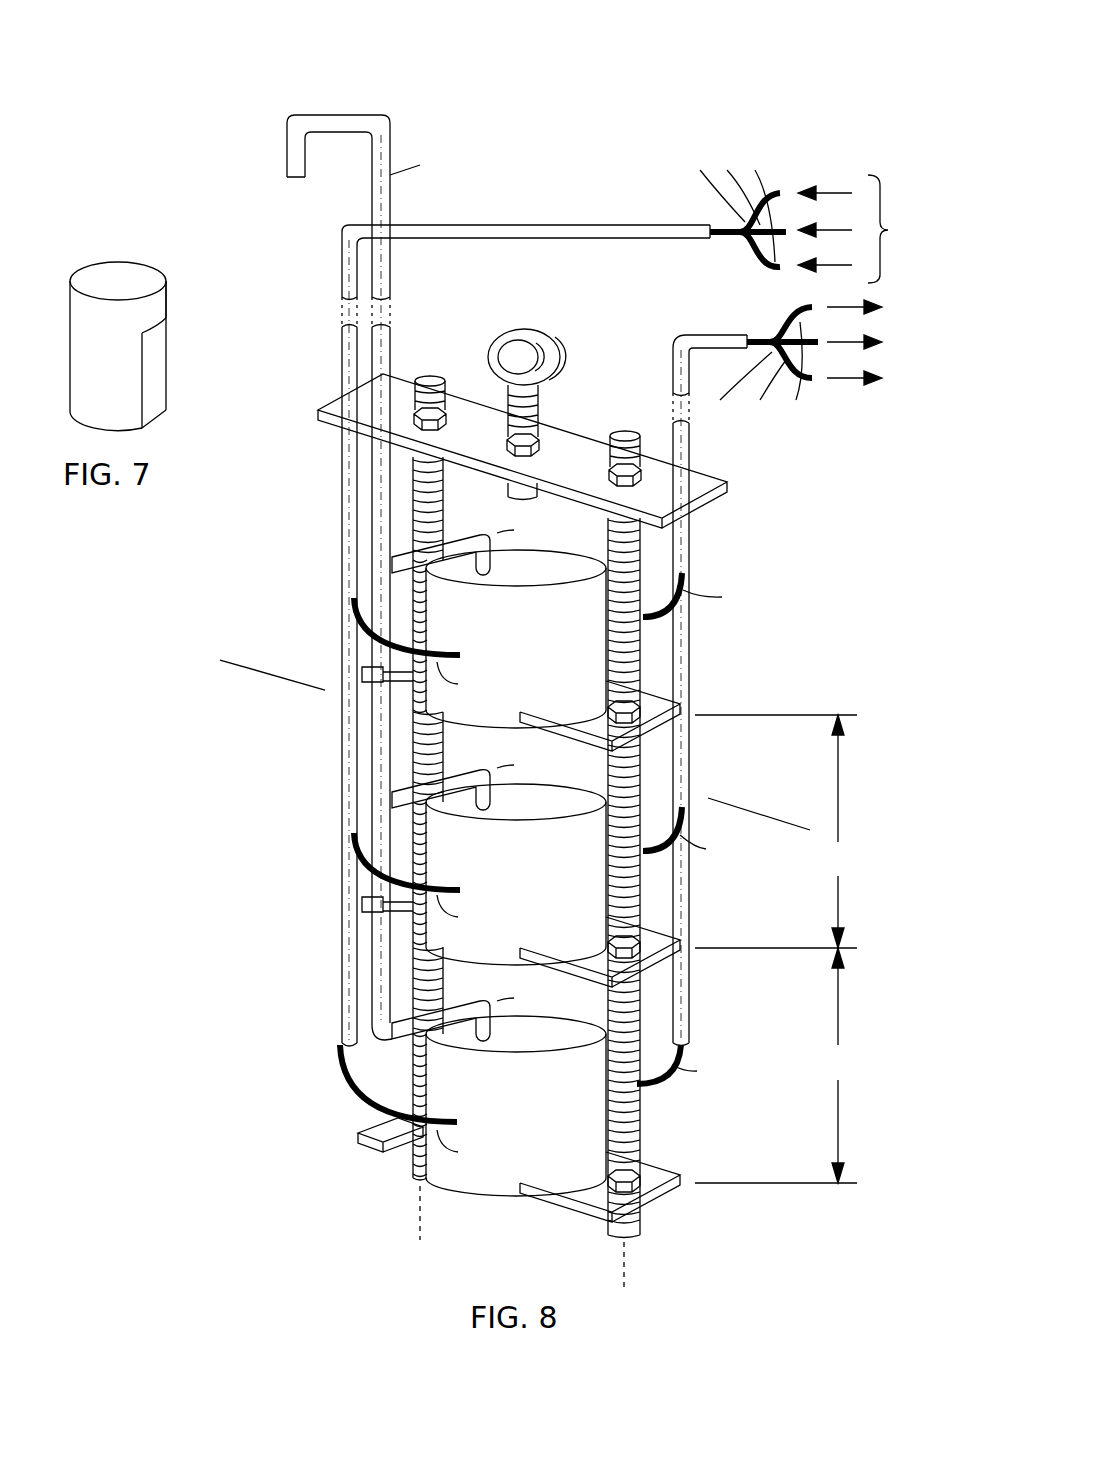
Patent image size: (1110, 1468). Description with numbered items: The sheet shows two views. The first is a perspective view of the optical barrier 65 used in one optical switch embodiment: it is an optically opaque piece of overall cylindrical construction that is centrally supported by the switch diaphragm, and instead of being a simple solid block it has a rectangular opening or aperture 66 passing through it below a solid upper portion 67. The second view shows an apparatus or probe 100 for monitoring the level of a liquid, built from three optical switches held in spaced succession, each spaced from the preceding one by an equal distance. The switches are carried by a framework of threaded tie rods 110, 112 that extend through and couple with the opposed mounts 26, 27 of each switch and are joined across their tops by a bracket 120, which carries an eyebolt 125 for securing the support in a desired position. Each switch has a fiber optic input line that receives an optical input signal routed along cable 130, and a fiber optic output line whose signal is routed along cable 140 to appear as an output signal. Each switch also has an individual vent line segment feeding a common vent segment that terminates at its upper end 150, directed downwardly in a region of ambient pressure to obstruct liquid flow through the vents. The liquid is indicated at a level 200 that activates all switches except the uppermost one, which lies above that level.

In FIG. 7, the optical barrier 65 is at (110, 278).
In FIG. 7, the rectangular opening or aperture 66 is at (163, 362).
In FIG. 7, the solid upper portion 67 is at (155, 308).
In FIG. 8, the apparatus or probe 100 is at (567, 103).
In FIG. 8, the threaded tie rod 110 is at (428, 377).
In FIG. 8, the threaded tie rod 112 is at (622, 432).
In FIG. 8, the bracket 120 is at (700, 483).
In FIG. 8, the eyebolt 125 is at (548, 343).
In FIG. 8, the cable 130 is at (597, 225).
In FIG. 8, the cable 140 is at (693, 334).
In FIG. 8, the upper end 150 is at (288, 160).
In FIG. 8, the level 200 is at (232, 662).
In FIG. 8, the mount 26 is at (405, 683).
In FIG. 8, the mount 27 is at (662, 703).